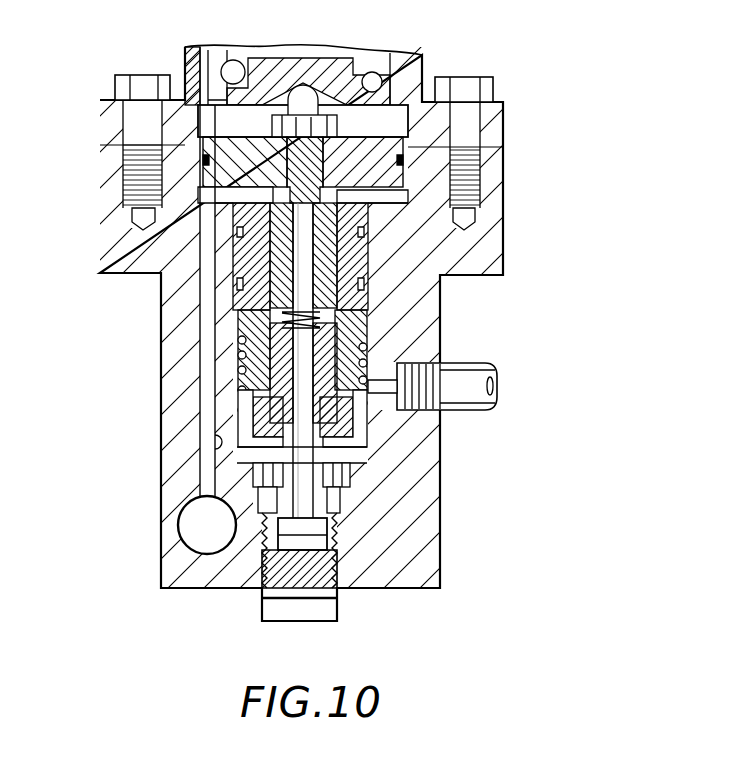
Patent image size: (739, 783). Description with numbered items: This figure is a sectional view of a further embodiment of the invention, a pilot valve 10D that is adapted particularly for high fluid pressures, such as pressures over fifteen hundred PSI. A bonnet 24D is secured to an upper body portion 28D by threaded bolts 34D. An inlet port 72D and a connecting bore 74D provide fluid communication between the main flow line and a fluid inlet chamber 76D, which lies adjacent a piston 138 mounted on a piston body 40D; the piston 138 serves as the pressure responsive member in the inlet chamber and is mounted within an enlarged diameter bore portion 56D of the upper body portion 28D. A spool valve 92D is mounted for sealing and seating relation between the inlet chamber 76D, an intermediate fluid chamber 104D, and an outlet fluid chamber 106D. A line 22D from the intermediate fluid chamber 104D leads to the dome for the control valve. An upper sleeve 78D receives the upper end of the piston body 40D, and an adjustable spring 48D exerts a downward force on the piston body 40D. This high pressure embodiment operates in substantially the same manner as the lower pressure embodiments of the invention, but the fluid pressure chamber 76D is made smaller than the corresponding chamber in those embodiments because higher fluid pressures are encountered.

The pilot valve 10D is at (424, 69).
The bonnet 24D is at (200, 63).
The adjustable spring 48D is at (373, 80).
The threaded bolts 34D is at (470, 83).
The piston 138 is at (385, 147).
The enlarged diameter bore portion 56D is at (405, 200).
The piston body 40D is at (327, 227).
The upper body portion 28D is at (480, 250).
The fluid inlet chamber 76D is at (200, 191).
The upper sleeve 78D is at (253, 250).
The line 22D is at (457, 377).
The spool valve 92D is at (363, 428).
The intermediate fluid chamber 104D is at (258, 399).
The connecting bore 74D is at (200, 447).
The outlet fluid chamber 106D is at (255, 473).
The inlet port 72D is at (200, 519).